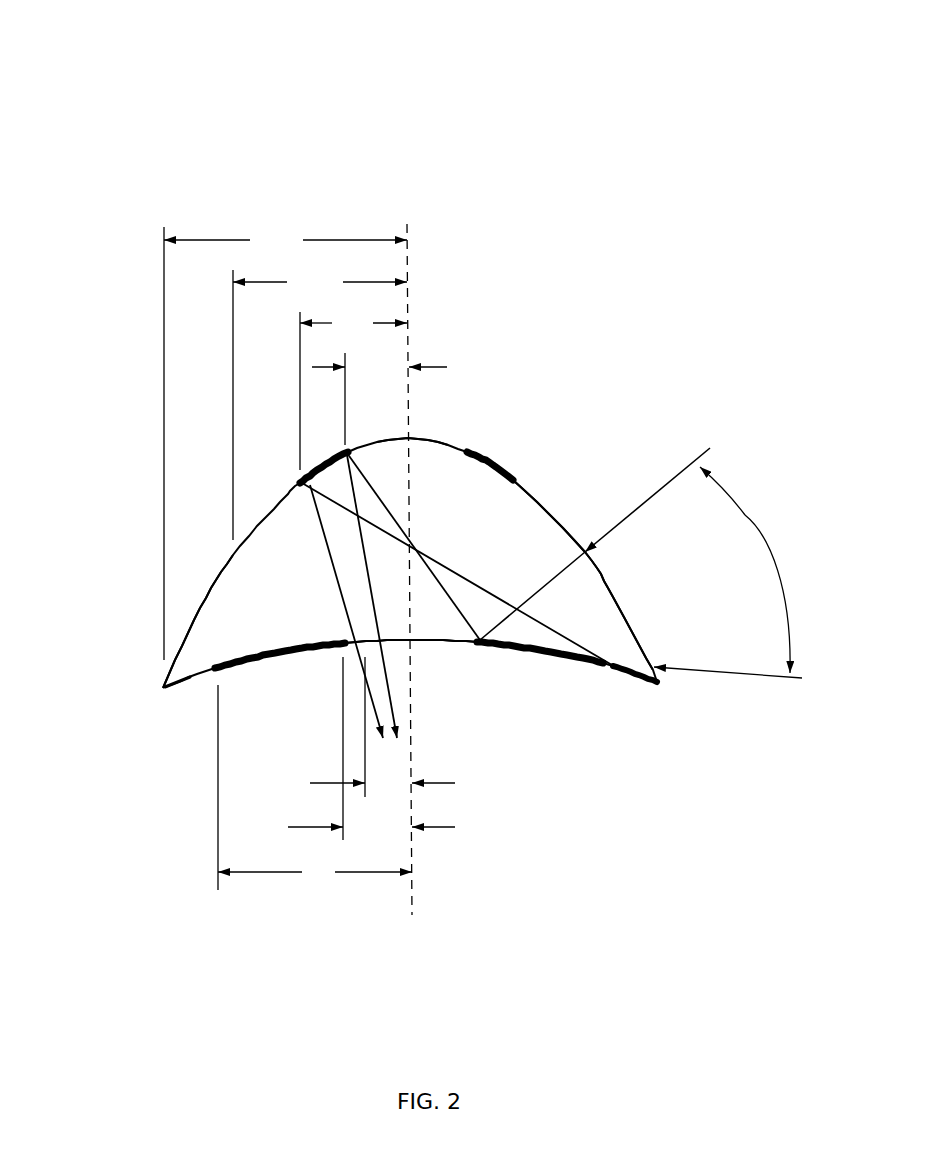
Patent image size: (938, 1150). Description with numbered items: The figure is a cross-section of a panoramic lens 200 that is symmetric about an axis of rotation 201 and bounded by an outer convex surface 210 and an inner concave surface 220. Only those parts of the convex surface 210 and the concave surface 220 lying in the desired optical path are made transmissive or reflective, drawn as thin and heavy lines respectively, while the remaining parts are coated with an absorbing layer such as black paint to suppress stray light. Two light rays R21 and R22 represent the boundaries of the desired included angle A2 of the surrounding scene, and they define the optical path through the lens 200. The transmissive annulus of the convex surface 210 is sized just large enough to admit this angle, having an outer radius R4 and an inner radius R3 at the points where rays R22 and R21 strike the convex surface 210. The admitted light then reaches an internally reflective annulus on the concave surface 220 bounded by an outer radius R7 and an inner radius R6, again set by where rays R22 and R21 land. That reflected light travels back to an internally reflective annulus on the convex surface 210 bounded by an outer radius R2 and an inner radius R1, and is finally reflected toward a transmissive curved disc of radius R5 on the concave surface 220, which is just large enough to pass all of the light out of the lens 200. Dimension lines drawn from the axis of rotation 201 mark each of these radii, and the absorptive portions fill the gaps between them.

The panoramic lens 200 is at (128, 97).
The axis of rotation 201 is at (407, 258).
The convex surface 210 is at (158, 168).
The concave surface 220 is at (167, 945).
The inner radius R1 is at (379, 399).
The outer radius R2 is at (353, 390).
The inner radius R3 is at (320, 405).
The outer radius R4 is at (285, 443).
The radius R5 is at (401, 727).
The inner radius R6 is at (371, 748).
The outer radius R7 is at (315, 787).
The light ray R21 is at (673, 477).
The light ray R22 is at (712, 672).
The included angle A2 is at (745, 570).